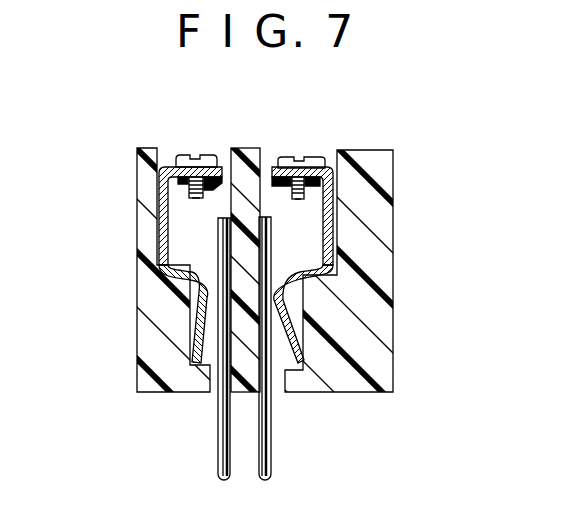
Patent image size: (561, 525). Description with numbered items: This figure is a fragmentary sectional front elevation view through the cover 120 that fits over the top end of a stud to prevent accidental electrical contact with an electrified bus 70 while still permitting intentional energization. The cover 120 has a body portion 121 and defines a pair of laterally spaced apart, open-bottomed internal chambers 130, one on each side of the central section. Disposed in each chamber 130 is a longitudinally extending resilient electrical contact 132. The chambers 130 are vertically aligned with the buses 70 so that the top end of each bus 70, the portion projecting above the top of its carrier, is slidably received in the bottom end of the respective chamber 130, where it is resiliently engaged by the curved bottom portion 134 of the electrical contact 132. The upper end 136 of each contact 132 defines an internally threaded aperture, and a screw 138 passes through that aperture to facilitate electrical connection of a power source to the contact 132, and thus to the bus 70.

The bus 70 is at (258, 465).
The cover 120 is at (130, 150).
The body portion 121 is at (150, 352).
The internal chamber 130 is at (188, 212).
The electrical contact 132 is at (172, 238).
The curved bottom portion 134 is at (205, 313).
The upper end 136 is at (273, 158).
The screw 138 is at (182, 153).